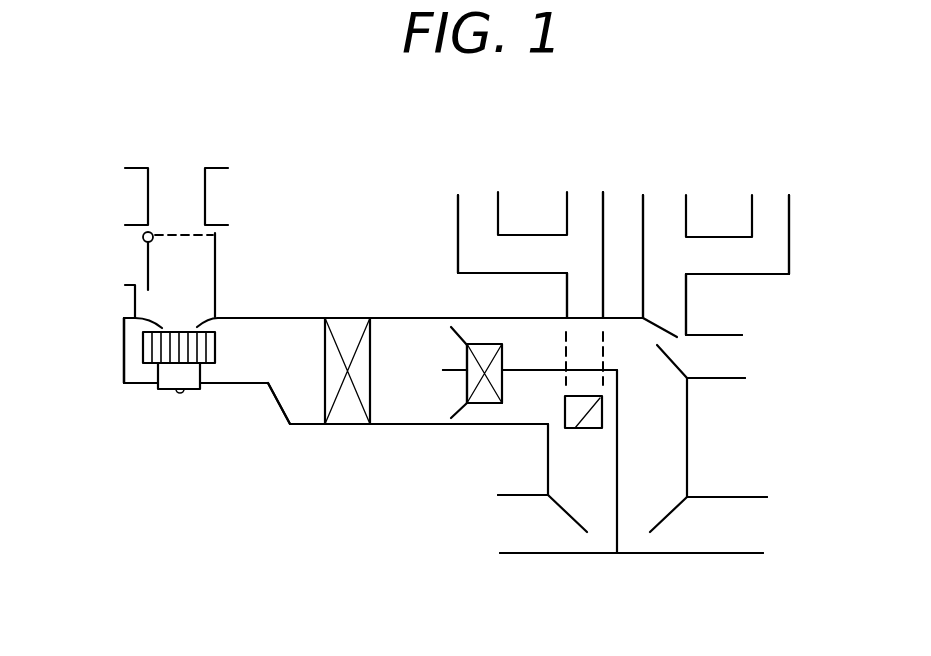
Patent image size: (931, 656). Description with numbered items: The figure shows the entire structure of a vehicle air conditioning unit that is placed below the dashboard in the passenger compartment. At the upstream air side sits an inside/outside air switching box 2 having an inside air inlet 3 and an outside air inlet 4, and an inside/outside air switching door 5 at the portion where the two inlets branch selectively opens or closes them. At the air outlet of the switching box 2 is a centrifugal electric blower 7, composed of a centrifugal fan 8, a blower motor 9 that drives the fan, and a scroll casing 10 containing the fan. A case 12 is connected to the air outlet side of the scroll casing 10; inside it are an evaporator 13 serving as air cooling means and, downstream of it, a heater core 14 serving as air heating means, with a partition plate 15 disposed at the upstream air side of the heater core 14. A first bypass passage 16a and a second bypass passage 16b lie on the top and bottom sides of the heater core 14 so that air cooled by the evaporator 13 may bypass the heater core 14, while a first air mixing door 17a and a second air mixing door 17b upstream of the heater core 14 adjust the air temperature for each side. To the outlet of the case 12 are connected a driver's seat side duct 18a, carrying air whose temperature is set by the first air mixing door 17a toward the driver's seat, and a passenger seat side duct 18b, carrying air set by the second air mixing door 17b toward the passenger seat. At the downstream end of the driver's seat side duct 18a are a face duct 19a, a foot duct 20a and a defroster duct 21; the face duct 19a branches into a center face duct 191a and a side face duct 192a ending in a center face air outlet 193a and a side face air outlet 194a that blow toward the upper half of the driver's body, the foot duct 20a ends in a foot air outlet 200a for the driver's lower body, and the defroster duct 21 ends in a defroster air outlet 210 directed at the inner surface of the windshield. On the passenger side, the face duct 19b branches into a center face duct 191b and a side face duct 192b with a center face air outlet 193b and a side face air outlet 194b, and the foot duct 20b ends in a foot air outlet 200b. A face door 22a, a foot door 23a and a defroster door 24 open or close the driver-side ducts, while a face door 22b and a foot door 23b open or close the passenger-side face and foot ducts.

The inside/outside air switching box 2 is at (115, 180).
The inside air inlet 3 is at (135, 226).
The outside air inlet 4 is at (150, 197).
The inside/outside air switching door 5 is at (147, 270).
The centrifugal electric blower 7 is at (108, 412).
The centrifugal fan 8 is at (157, 352).
The blower motor 9 is at (192, 382).
The scroll casing 10 is at (142, 385).
The case 12 is at (395, 427).
The evaporator 13 is at (337, 418).
The heater core 14 is at (470, 368).
The partition plate 15 is at (452, 377).
The first bypass passage 16a is at (470, 330).
The second bypass passage 16b is at (483, 415).
The first air mixing door 17a is at (457, 338).
The second air mixing door 17b is at (463, 412).
The driver's seat side duct 18a is at (545, 317).
The passenger seat side duct 18b is at (520, 427).
The face duct 19a is at (687, 300).
The face duct 19b is at (608, 288).
The foot duct 20a is at (735, 495).
The foot duct 20b is at (523, 557).
The defroster duct 21 is at (700, 378).
The face door 22a is at (660, 323).
The face door 22b is at (592, 428).
The foot door 23a is at (672, 513).
The foot door 23b is at (563, 517).
The defroster door 24 is at (678, 362).
The center face duct 191a is at (687, 205).
The center face duct 191b is at (563, 210).
The side face duct 192a is at (792, 230).
The side face duct 192b is at (458, 200).
The center face air outlet 193a is at (660, 200).
The center face air outlet 193b is at (587, 202).
The side face air outlet 194a is at (767, 202).
The side face air outlet 194b is at (478, 198).
The foot air outlet 200a is at (758, 537).
The foot air outlet 200b is at (500, 532).
The defroster air outlet 210 is at (735, 358).